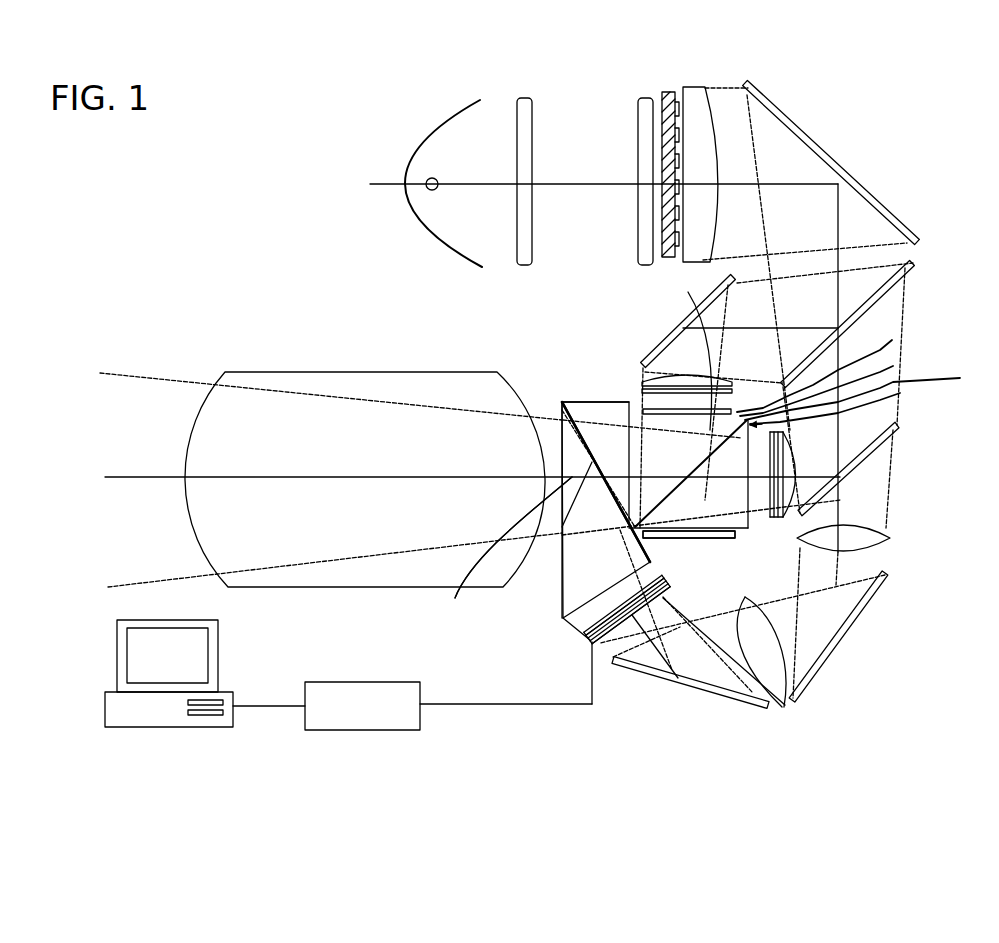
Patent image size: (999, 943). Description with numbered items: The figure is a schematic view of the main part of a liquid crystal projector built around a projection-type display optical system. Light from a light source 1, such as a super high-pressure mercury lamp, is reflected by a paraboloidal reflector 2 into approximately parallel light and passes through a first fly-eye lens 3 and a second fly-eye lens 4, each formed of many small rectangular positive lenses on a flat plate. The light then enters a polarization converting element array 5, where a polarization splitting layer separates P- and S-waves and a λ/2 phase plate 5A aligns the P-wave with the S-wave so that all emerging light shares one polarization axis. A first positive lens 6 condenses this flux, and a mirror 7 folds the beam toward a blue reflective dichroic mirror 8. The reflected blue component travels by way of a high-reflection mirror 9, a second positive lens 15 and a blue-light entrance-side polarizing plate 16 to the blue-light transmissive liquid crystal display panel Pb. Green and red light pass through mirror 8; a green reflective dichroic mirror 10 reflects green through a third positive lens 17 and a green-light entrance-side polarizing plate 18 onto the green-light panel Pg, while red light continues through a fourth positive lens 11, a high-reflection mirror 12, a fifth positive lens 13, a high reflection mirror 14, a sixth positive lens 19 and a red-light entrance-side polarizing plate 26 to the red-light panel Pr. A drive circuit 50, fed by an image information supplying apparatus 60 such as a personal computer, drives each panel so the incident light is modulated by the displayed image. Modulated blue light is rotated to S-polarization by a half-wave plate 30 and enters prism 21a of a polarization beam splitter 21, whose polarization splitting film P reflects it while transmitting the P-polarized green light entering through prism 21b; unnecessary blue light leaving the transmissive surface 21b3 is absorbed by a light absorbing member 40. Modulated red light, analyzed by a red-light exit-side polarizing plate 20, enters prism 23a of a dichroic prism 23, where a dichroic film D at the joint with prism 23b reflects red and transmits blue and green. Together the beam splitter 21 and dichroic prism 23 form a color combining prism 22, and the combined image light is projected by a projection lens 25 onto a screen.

The light source 1 is at (427, 179).
The reflector 2 is at (445, 120).
The first fly-eye lens 3 is at (525, 98).
The second fly-eye lens 4 is at (640, 98).
The polarization converting element array 5 is at (665, 92).
The λ/2 phase plate 5A is at (678, 92).
The first positive lens 6 is at (700, 87).
The reflecting mirror 7 is at (770, 103).
The blue reflective dichroic mirror 8 is at (918, 268).
The high-reflection mirror 9 is at (675, 322).
The polarization splitting film P is at (695, 349).
The second positive lens 15 is at (650, 389).
The blue-light entrance-side polarizing plate 16 is at (643, 384).
The blue-light transmissive liquid crystal display panel Pb is at (641, 411).
The third positive lens 17 is at (900, 393).
The green-light entrance-side polarizing plate 18 is at (786, 519).
The green-light transmissive liquid crystal display panel Pg is at (768, 518).
The green reflective dichroic mirror 10 is at (898, 427).
The fourth positive lens 11 is at (892, 538).
The high-reflection mirror 12 is at (890, 572).
The fifth positive lens 13 is at (796, 703).
The high reflection mirror 14 is at (697, 691).
The sixth positive lens 19 is at (593, 646).
The red-light exit-side polarizing plate 20 is at (588, 628).
The red-light transmissive liquid crystal display panel Pr is at (588, 640).
The red-light entrance-side polarizing plate 26 is at (590, 648).
The polarization beam splitter 21 is at (807, 448).
The prism 21a is at (893, 366).
The prism 21b is at (673, 540).
The transmissive surface 21b3 is at (715, 540).
The half-wave plate 30 is at (892, 340).
The light absorbing member 40 is at (700, 598).
The color combining prism 22 is at (554, 394).
The dichroic prism 23 is at (559, 566).
The prism 23a is at (565, 615).
The prism 23b is at (582, 396).
The dichroic film D is at (506, 548).
The projection lens 25 is at (397, 371).
The drive circuit 50 is at (400, 682).
The image information supplying apparatus 60 is at (218, 662).